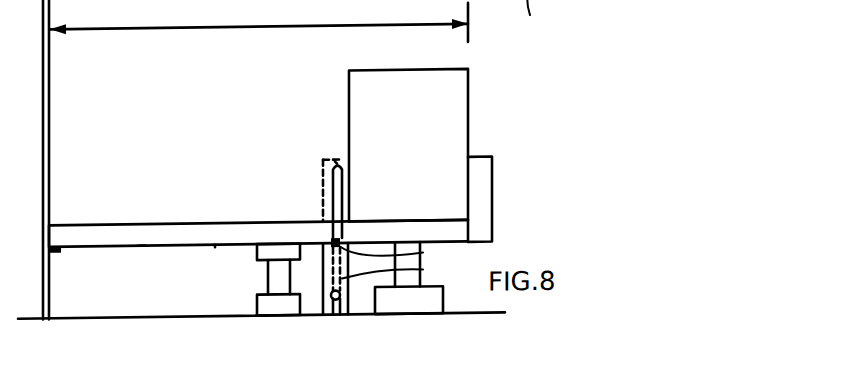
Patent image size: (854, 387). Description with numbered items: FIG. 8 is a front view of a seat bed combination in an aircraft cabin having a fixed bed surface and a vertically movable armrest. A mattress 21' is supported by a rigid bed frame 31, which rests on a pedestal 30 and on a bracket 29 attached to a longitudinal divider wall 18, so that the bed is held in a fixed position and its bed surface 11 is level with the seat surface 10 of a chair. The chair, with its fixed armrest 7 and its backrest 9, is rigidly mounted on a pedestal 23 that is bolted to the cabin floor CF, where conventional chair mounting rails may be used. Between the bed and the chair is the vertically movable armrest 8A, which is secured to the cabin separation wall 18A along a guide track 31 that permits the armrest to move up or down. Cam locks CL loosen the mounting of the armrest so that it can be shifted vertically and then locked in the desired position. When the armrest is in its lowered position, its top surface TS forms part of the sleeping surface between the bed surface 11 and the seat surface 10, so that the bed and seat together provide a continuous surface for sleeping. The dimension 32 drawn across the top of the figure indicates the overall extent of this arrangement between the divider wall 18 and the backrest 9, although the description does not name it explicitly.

The longitudinal divider wall 18 is at (50, 98).
The cabin separation wall 18A is at (206, 139).
The distance 32 is at (227, 34).
The backrest 9 is at (460, 134).
The fixed armrest 7 is at (487, 205).
The bed surface 11 is at (155, 226).
The seat surface 10 is at (421, 224).
The top surface TS is at (342, 225).
The vertically movable armrest 8A is at (323, 204).
The rigid bed frame 31 is at (335, 166).
The bracket 29 is at (53, 252).
The mattress 21' is at (152, 263).
The pedestal 30 is at (283, 309).
The pedestal 23 is at (407, 307).
The cam locks CL is at (400, 265).
The cabin floor CF is at (481, 320).